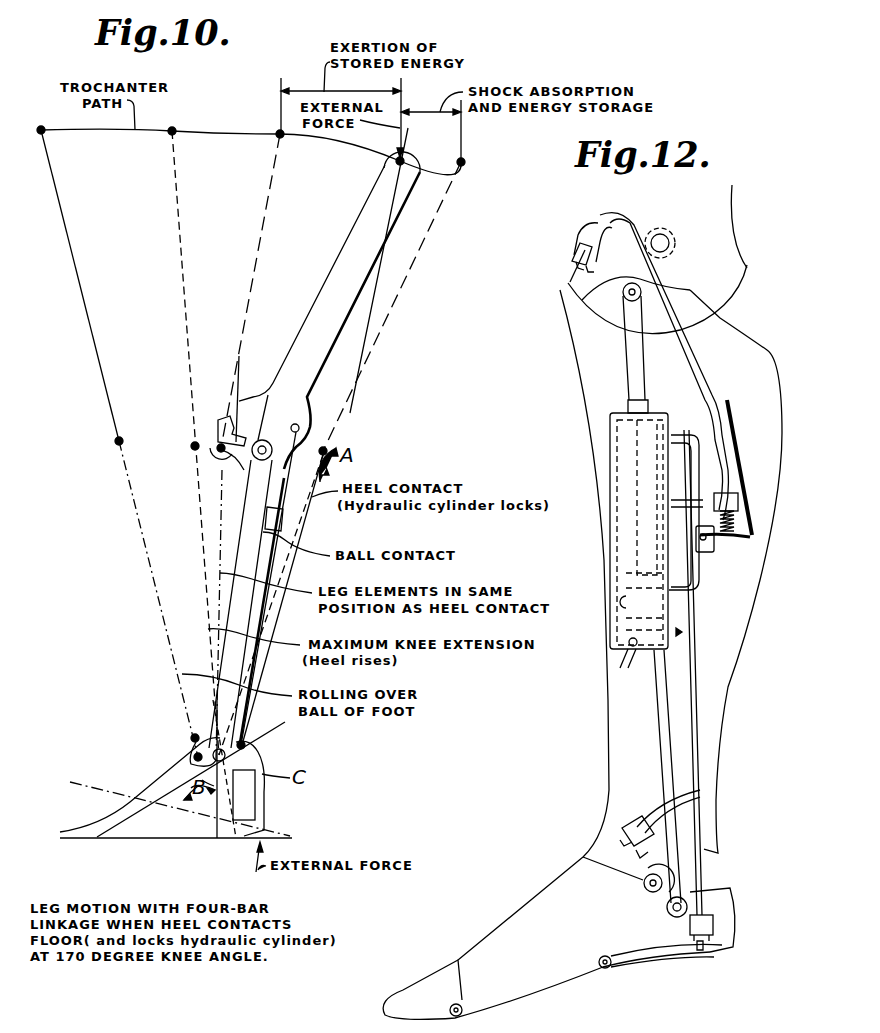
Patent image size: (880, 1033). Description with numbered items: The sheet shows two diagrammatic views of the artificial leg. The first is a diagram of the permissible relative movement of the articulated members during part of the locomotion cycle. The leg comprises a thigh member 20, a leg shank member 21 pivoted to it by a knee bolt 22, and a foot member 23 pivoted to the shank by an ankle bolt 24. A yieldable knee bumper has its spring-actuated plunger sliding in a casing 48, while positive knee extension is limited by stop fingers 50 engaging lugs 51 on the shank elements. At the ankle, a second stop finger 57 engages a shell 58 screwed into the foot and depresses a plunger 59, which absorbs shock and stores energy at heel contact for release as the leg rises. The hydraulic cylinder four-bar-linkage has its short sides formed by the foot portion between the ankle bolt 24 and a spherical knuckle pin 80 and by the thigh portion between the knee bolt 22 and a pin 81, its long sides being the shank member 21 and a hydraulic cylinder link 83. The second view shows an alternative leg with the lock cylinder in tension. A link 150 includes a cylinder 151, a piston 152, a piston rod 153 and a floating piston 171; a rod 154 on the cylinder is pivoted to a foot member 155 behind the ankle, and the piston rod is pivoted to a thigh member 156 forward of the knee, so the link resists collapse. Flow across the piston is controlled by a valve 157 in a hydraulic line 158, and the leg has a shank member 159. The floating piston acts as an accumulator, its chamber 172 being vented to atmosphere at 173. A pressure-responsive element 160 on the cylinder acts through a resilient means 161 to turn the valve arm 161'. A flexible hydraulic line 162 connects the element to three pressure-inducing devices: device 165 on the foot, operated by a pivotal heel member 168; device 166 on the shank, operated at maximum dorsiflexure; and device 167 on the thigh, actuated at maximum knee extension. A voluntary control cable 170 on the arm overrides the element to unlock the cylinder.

In FIG. 10, the thigh member 20 is at (93, 330).
In FIG. 10, the leg shank member 21 is at (242, 520).
In FIG. 10, the knee bolt 22 is at (123, 441).
In FIG. 10, the foot member 23 is at (148, 794).
In FIG. 10, the ankle bolt 24 is at (208, 766).
In FIG. 10, the casing 48 is at (216, 428).
In FIG. 10, the stop fingers 50 is at (241, 410).
In FIG. 10, the lugs 51 is at (222, 466).
In FIG. 10, the second stop finger 57 is at (262, 752).
In FIG. 10, the shell 58 is at (252, 818).
In FIG. 10, the plunger 59 is at (256, 778).
In FIG. 10, the spherical knuckle pin 80 is at (194, 746).
In FIG. 10, the pin 81 is at (298, 428).
In FIG. 10, the hydraulic cylinder link 83 is at (290, 528).
In FIG. 12, the link 150 is at (622, 683).
In FIG. 12, the cylinder 151 is at (626, 606).
In FIG. 12, the piston 152 is at (626, 582).
In FIG. 12, the piston rod 153 is at (628, 383).
In FIG. 12, the rod 154 is at (655, 731).
In FIG. 12, the foot member 155 is at (545, 900).
In FIG. 12, the thigh member 156 is at (742, 258).
In FIG. 12, the valve 157 is at (714, 554).
In FIG. 12, the hydraulic line 158 is at (688, 594).
In FIG. 12, the shank member 159 is at (726, 686).
In FIG. 12, the pressure-responsive element 160 is at (738, 496).
In FIG. 12, the resilient means 161 is at (766, 519).
In FIG. 12, the arm of the valve 161' is at (759, 544).
In FIG. 12, the flexible hydraulic line 162 is at (695, 657).
In FIG. 12, the pressure-inducing device 165 is at (714, 920).
In FIG. 12, the pressure-inducing device 166 is at (619, 832).
In FIG. 12, the pressure-inducing device 167 is at (570, 270).
In FIG. 12, the heel member 168 is at (710, 958).
In FIG. 12, the voluntary control cable 170 is at (731, 442).
In FIG. 12, the floating piston 171 is at (640, 634).
In FIG. 12, the chamber 172 is at (630, 642).
In FIG. 12, the vent 173 is at (630, 668).